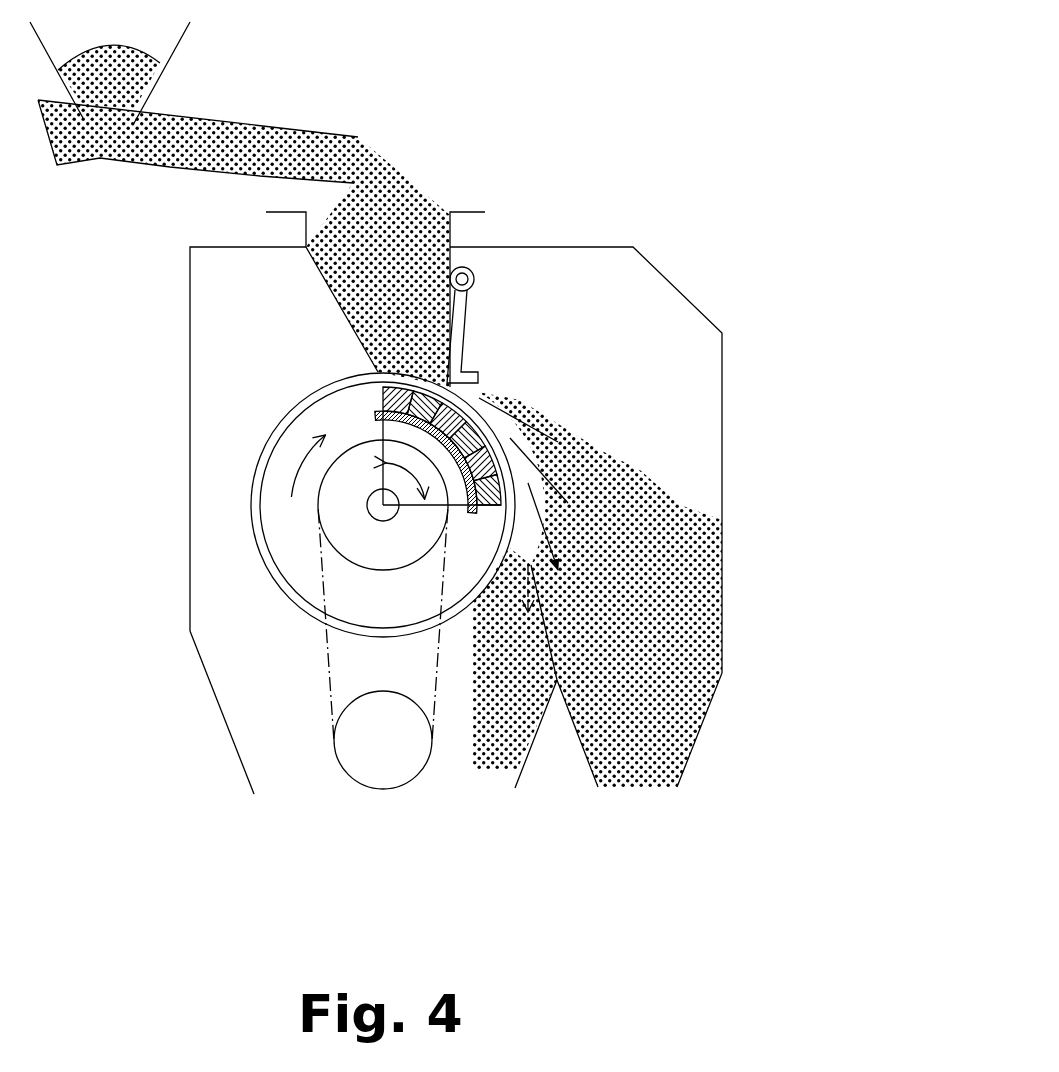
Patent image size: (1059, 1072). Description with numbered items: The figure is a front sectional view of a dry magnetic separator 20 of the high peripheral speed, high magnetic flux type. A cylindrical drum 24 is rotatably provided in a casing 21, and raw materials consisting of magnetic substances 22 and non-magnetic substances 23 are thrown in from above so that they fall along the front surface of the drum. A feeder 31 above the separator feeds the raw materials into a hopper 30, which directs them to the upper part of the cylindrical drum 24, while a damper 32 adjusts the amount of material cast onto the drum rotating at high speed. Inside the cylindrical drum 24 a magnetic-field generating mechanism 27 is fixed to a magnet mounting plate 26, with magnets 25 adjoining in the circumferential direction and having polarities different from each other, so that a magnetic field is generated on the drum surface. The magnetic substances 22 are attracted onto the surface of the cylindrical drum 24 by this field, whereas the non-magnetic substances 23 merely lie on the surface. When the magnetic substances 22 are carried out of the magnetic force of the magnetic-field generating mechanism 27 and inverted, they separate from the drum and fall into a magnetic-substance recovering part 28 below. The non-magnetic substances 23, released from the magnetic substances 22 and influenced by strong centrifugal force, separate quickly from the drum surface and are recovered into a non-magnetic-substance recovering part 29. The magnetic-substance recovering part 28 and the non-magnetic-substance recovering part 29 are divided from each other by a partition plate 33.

The dry magnetic separator 20 is at (625, 80).
The casing 21 is at (722, 352).
The magnetic substances 22 is at (520, 733).
The non-magnetic substances 23 is at (665, 703).
The cylindrical drum 24 is at (279, 389).
The magnets 25 is at (487, 465).
The magnet mounting plate 26 is at (490, 430).
The magnetic-field generating mechanism 27 is at (812, 408).
The magnetic-substance recovering part 28 is at (223, 720).
The non-magnetic-substance recovering part 29 is at (582, 748).
The hopper 30 is at (450, 212).
The feeder 31 is at (157, 88).
The damper 32 is at (475, 278).
The partition plate 33 is at (550, 650).